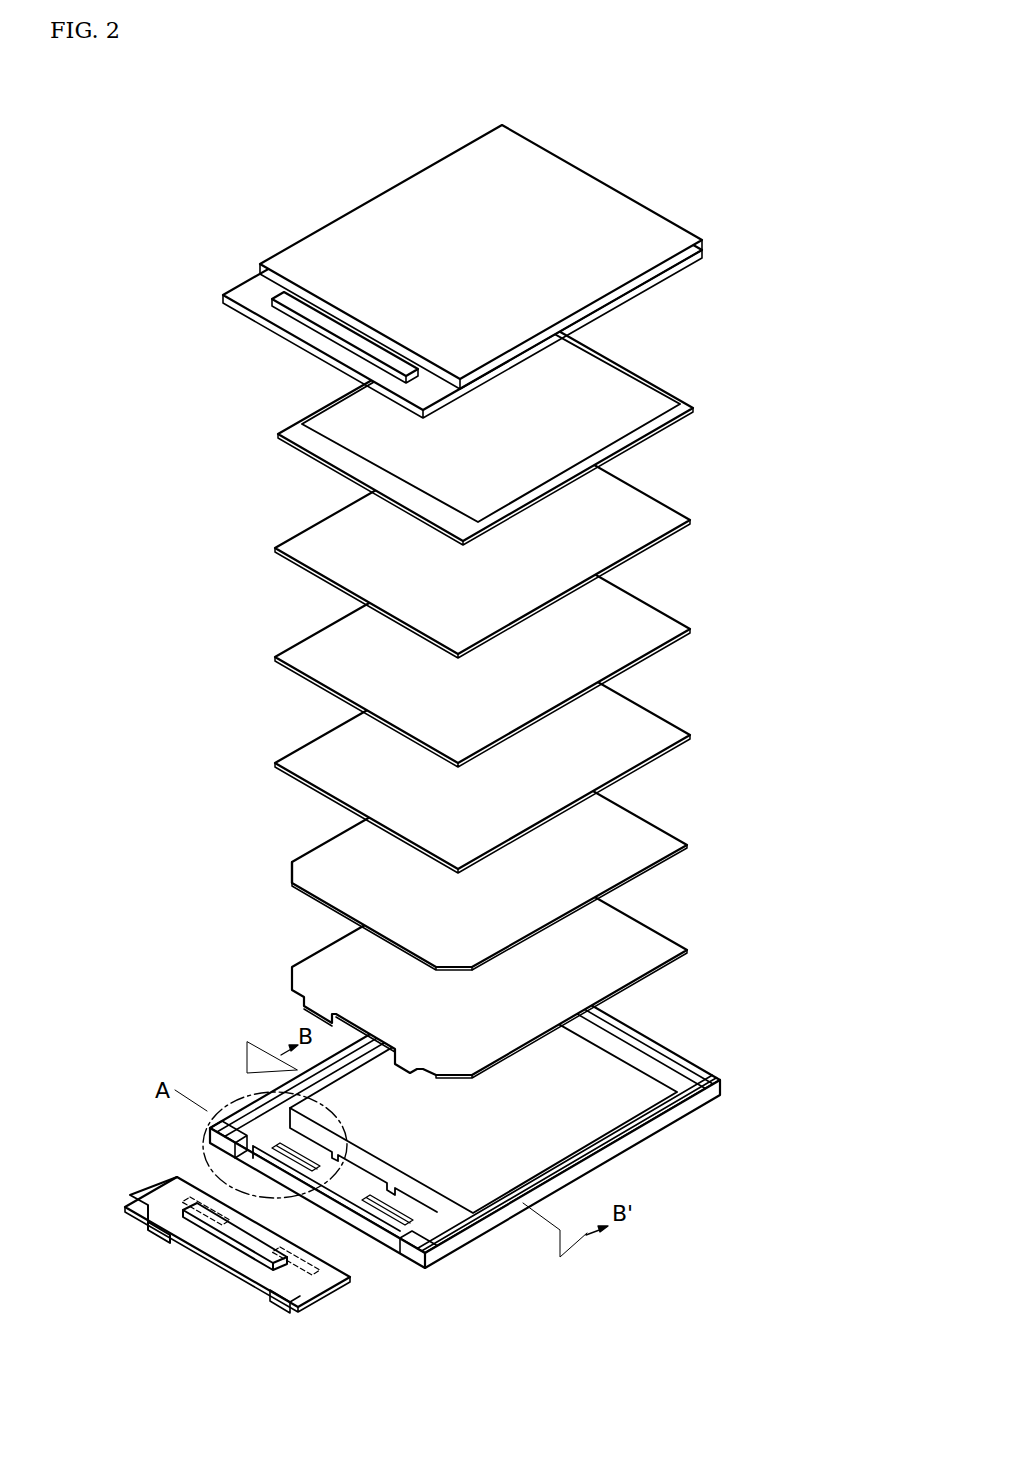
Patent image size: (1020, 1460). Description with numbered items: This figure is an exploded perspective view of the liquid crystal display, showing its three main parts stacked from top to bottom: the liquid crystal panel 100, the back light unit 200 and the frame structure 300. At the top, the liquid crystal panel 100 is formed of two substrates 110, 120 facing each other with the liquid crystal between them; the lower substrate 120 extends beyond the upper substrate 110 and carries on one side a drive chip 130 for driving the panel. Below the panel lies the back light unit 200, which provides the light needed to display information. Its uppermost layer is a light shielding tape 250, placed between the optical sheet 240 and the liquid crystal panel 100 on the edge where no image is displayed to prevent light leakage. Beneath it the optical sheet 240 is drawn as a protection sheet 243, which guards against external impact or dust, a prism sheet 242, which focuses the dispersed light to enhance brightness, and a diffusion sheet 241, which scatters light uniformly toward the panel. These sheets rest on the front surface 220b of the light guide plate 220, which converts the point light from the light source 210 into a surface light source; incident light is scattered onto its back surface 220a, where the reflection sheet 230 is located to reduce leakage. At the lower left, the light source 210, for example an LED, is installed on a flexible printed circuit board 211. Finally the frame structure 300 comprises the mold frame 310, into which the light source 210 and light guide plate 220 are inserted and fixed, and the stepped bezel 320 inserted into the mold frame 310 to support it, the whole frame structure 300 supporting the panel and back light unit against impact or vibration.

The liquid crystal panel 100 is at (437, 271).
The substrate 110 is at (375, 218).
The lower substrate 120 is at (263, 307).
The drive chip 130 is at (332, 328).
The back light unit 200 is at (477, 807).
The light source 210 is at (212, 1232).
The printed circuit board 211 is at (160, 1207).
The light guide plate 220 is at (486, 855).
The back surface of light guide plate 220a is at (670, 862).
The front surface of light guide plate 220b is at (323, 885).
The reflection sheet 230 is at (307, 982).
The optical sheet 240 is at (547, 644).
The diffusion sheet 241 is at (668, 718).
The prism sheet 242 is at (672, 625).
The protection sheet 243 is at (767, 678).
The light shielding tape 250 is at (487, 423).
The frame structure 300 is at (484, 1111).
The mold frame 310 is at (467, 1107).
The bezel 320 is at (690, 1098).